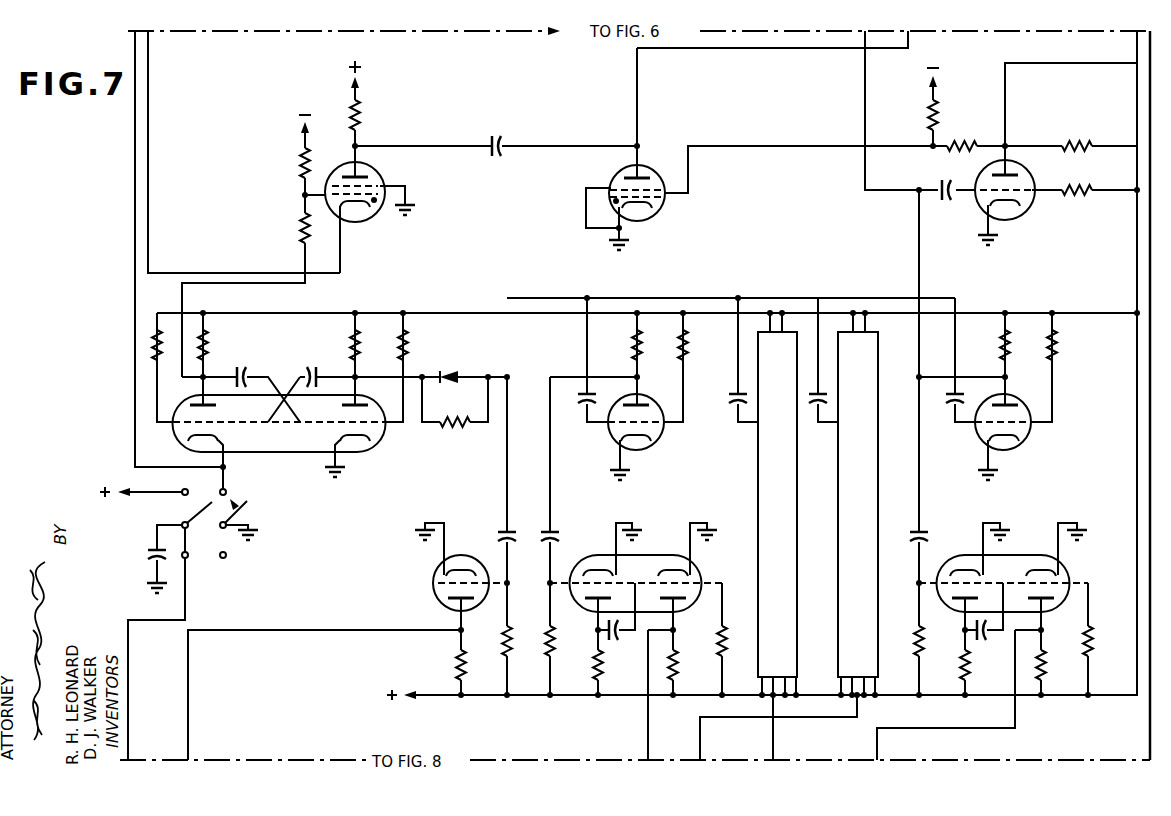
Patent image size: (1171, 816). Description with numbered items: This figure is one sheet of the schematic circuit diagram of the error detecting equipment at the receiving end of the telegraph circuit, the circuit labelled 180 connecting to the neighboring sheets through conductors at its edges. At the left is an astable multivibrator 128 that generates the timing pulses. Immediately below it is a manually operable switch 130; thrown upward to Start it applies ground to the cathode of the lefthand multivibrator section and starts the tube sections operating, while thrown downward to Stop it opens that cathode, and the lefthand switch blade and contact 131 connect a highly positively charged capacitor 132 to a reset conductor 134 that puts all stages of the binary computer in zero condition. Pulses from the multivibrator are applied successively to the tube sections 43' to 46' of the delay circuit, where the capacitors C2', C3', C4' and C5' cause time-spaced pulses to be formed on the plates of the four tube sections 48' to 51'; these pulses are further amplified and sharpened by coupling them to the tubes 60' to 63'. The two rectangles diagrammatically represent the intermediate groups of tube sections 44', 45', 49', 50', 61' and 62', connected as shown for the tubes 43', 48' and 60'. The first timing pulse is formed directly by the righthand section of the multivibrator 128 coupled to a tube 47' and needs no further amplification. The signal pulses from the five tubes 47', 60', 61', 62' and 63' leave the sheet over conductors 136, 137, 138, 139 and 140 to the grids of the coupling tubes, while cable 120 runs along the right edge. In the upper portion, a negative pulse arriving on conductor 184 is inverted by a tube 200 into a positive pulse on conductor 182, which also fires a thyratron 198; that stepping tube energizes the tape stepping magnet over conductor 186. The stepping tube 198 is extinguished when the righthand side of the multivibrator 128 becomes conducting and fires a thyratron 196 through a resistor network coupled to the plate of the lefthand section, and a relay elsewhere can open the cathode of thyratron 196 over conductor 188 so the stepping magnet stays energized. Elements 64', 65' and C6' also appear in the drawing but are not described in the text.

The counting circuit unit 180 is at (150, 249).
The conductor 188 is at (149, 61).
The thyratron 196 is at (378, 174).
The thyratron 198 is at (612, 175).
The conductor 186 is at (706, 48).
The conductor 184 is at (865, 74).
The conductor 182 is at (1138, 63).
The tube 200 is at (980, 205).
The astable multivibrator 128 is at (295, 461).
The diode 64' is at (464, 363).
The resistor 65' is at (455, 417).
The manually operable switch 130 is at (245, 514).
The switch blade and contact 131 is at (186, 529).
The capacitor 132 is at (152, 556).
The reset conductor 134 is at (129, 711).
The conductor 136 is at (190, 748).
The capacitor C2' is at (582, 367).
The tube section 43' is at (619, 395).
The capacitor C3' is at (727, 368).
The tube section 44' is at (778, 504).
The tube section 49' is at (778, 504).
The tube 61' is at (778, 504).
The capacitor C4' is at (821, 372).
The tube section 45' is at (858, 504).
The tube section 50' is at (858, 504).
The tube 62' is at (858, 504).
The capacitor C5' is at (951, 369).
The tube section 46' is at (995, 395).
The tube 47' is at (465, 537).
The capacitor C6' is at (753, 444).
The tube section 48' is at (636, 610).
The tube 60' is at (697, 627).
The conductor 137 is at (648, 748).
The conductor 139 is at (700, 748).
The conductor 138 is at (777, 748).
The conductor 140 is at (877, 748).
The tube section 51' is at (1003, 610).
The tube 63' is at (1064, 627).
The cable 120 is at (1150, 748).